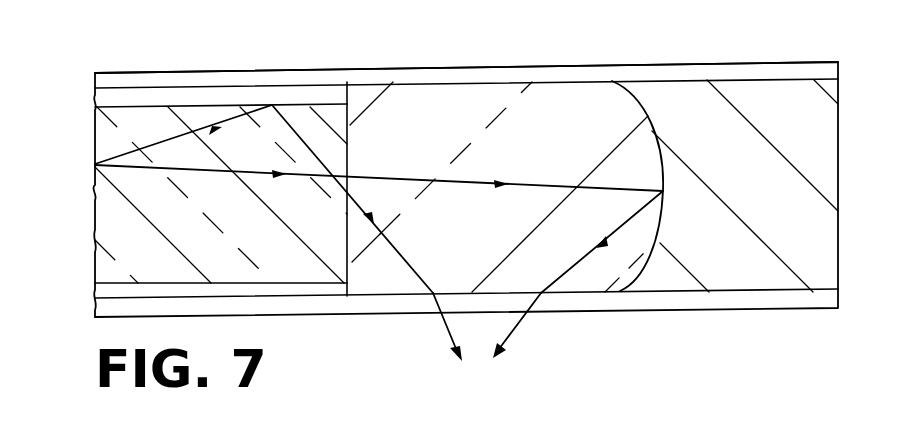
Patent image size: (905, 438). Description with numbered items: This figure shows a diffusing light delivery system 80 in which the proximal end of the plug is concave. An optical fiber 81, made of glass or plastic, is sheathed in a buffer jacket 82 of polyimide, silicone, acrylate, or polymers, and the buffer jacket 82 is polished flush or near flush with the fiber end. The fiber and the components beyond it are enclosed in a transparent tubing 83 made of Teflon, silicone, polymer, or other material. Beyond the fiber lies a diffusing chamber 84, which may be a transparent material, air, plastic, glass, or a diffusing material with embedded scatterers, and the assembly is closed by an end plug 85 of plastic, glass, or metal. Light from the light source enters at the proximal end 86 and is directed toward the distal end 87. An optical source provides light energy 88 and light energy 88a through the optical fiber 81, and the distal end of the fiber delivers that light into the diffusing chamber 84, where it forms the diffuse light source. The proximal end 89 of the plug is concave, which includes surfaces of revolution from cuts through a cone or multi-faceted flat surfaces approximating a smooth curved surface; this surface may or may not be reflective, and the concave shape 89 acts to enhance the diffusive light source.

The system 80 is at (449, 31).
The optical fiber 81 is at (113, 228).
The buffer jacket 82 is at (95, 95).
The transparent tubing 83 is at (482, 67).
The diffusing chamber 84 is at (560, 155).
The end plug 85 is at (770, 182).
The proximal end 86 is at (93, 187).
The distal end 87 is at (350, 266).
The light energy 88 is at (517, 333).
The light energy 88a is at (447, 334).
The concave proximal end of plug 89 is at (625, 84).